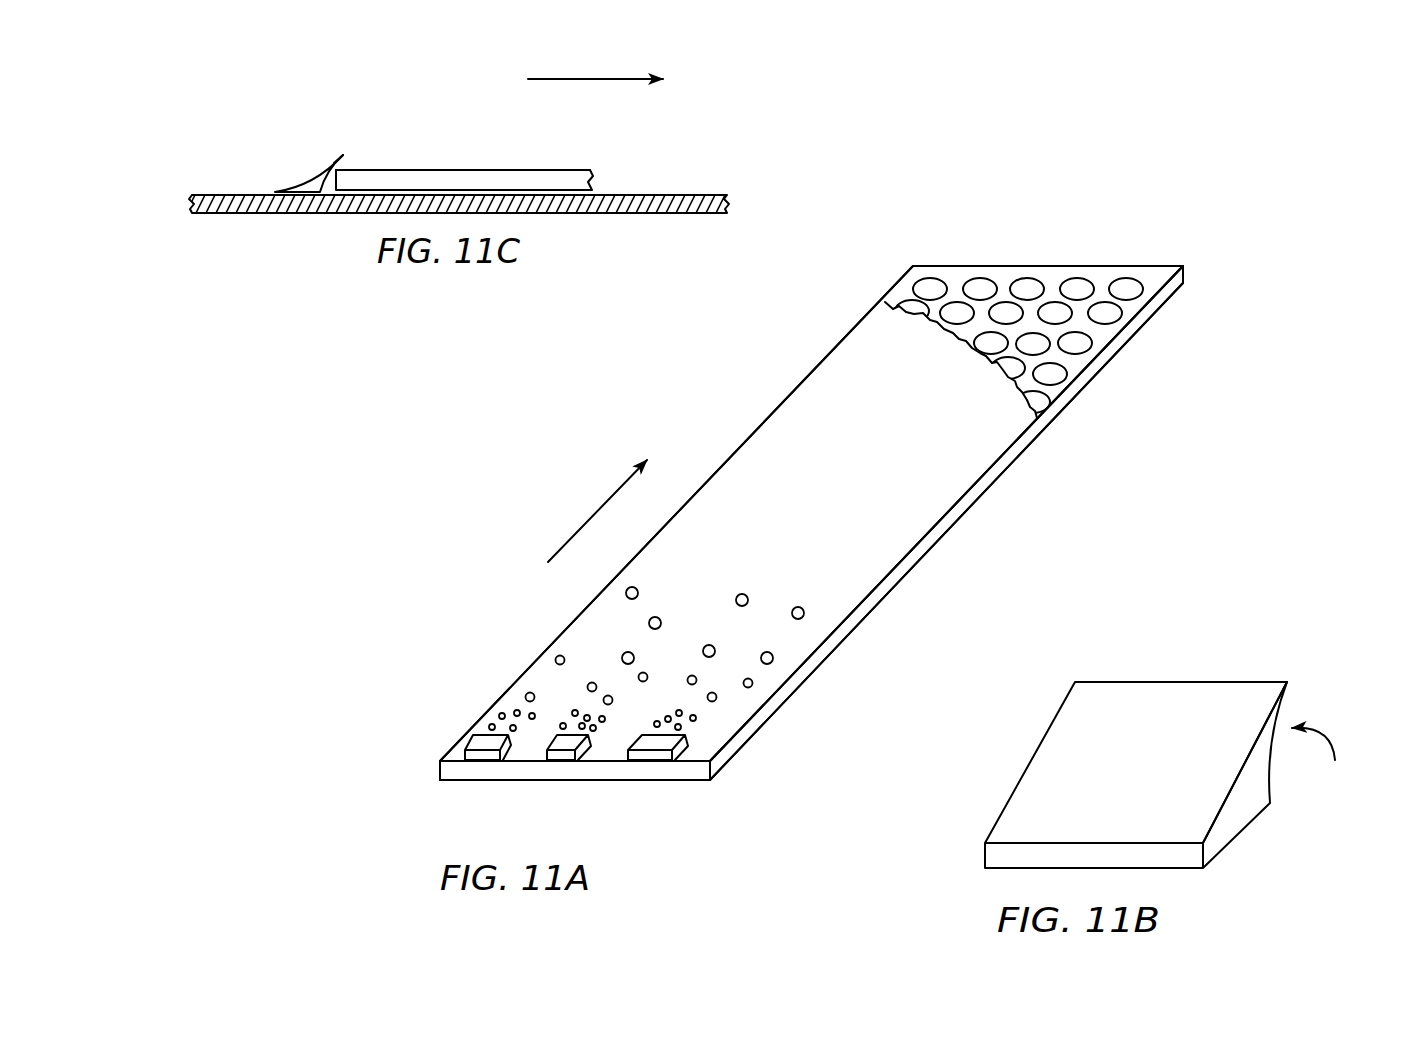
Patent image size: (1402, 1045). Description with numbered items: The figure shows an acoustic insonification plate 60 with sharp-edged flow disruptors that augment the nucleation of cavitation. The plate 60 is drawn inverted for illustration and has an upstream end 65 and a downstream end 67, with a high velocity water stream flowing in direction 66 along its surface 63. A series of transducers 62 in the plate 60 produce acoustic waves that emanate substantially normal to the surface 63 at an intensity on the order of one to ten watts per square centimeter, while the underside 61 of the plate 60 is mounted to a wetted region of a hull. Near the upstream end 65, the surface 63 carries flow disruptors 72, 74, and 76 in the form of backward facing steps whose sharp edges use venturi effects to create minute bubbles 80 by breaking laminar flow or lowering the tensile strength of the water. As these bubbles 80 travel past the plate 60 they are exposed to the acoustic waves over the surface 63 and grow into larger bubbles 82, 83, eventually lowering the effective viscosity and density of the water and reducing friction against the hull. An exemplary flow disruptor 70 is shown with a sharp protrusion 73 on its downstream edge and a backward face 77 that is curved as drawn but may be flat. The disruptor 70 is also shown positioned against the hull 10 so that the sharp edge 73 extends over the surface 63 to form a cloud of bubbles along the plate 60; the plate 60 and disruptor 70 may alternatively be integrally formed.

In FIG. 11C, the hull 10 is at (222, 194).
In FIG. 11C, the acoustic insonification plate 60 is at (563, 169).
In FIG. 11A, the acoustic insonification plate 60 is at (1045, 175).
In FIG. 11A, the underside of plate 61 is at (982, 509).
In FIG. 11A, the transducers 62 is at (1130, 277).
In FIG. 11C, the surface of cavitation plate 63 is at (446, 169).
In FIG. 11A, the surface of cavitation plate 63 is at (868, 456).
In FIG. 11A, the upstream end 65 is at (422, 769).
In FIG. 11C, the flow direction 66 is at (593, 78).
In FIG. 11A, the flow direction 66 is at (583, 527).
In FIG. 11A, the downstream end 67 is at (913, 248).
In FIG. 11C, the flow disruptor 70 is at (298, 179).
In FIG. 11B, the flow disruptor 70 is at (1017, 785).
In FIG. 11A, the flow disruptor 72 is at (480, 742).
In FIG. 11C, the sharp protrusion 73 is at (350, 154).
In FIG. 11B, the sharp protrusion 73 is at (1253, 682).
In FIG. 11A, the flow disruptor 74 is at (535, 761).
In FIG. 11A, the flow disruptor 76 is at (640, 750).
In FIG. 11B, the backward face 77 is at (1322, 757).
In FIG. 11A, the minute bubbles 80 is at (698, 722).
In FIG. 11A, the larger bubbles 82 is at (755, 684).
In FIG. 11A, the larger bubbles 83 is at (748, 595).